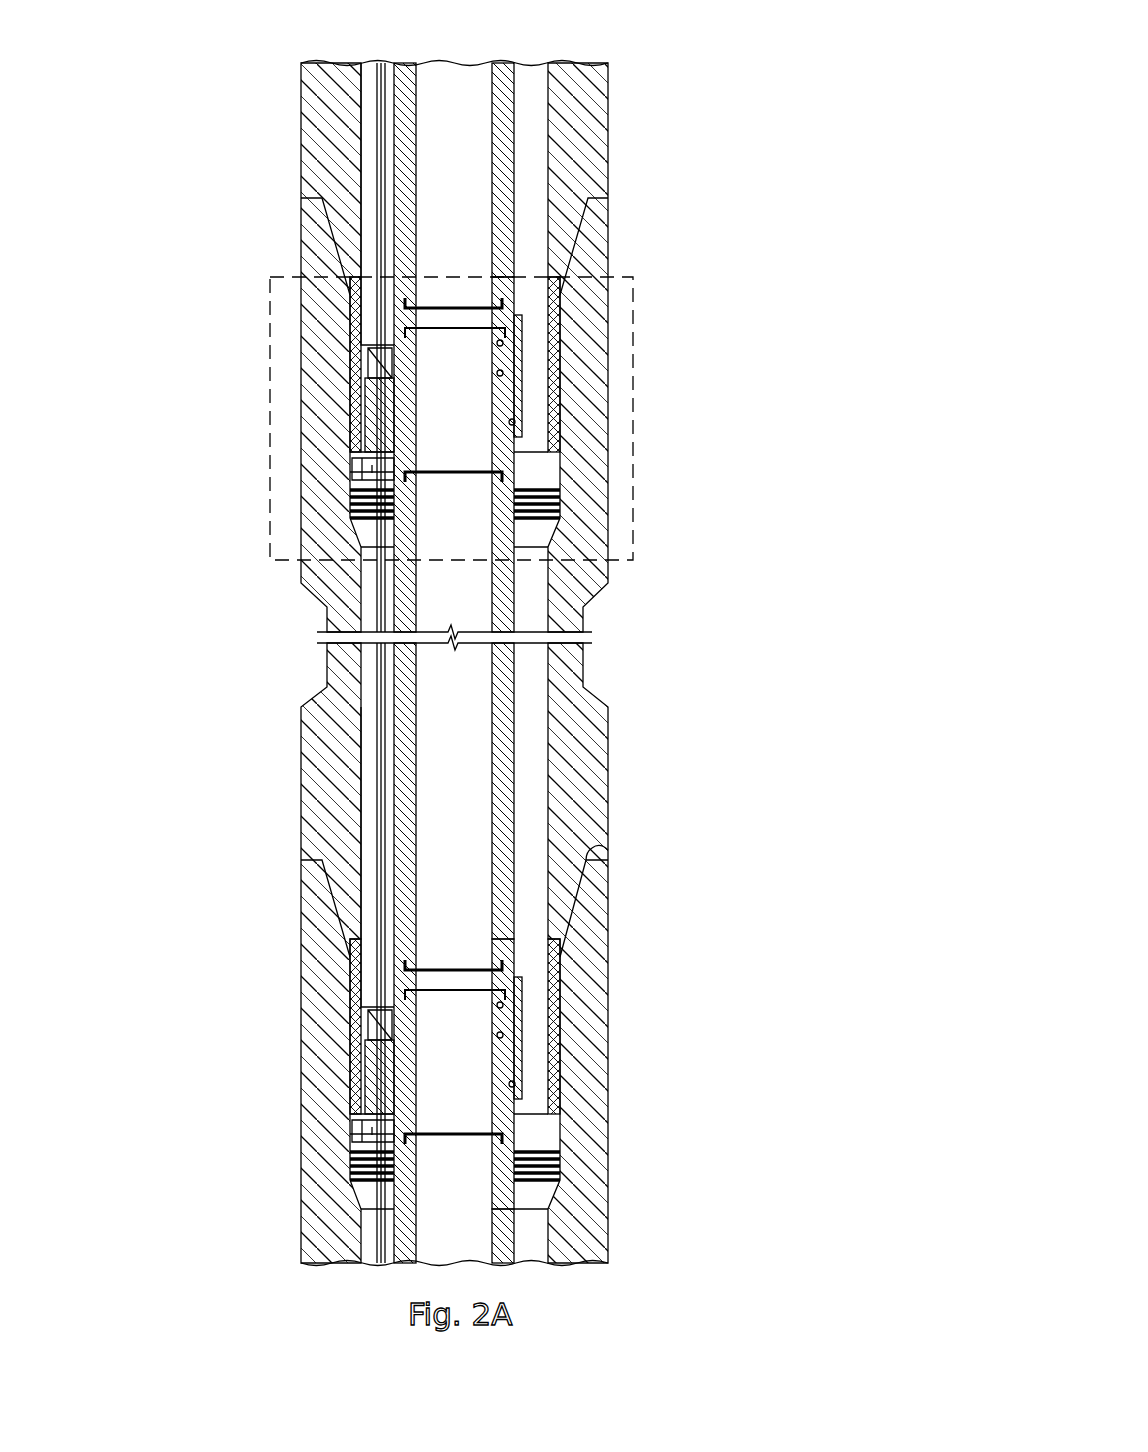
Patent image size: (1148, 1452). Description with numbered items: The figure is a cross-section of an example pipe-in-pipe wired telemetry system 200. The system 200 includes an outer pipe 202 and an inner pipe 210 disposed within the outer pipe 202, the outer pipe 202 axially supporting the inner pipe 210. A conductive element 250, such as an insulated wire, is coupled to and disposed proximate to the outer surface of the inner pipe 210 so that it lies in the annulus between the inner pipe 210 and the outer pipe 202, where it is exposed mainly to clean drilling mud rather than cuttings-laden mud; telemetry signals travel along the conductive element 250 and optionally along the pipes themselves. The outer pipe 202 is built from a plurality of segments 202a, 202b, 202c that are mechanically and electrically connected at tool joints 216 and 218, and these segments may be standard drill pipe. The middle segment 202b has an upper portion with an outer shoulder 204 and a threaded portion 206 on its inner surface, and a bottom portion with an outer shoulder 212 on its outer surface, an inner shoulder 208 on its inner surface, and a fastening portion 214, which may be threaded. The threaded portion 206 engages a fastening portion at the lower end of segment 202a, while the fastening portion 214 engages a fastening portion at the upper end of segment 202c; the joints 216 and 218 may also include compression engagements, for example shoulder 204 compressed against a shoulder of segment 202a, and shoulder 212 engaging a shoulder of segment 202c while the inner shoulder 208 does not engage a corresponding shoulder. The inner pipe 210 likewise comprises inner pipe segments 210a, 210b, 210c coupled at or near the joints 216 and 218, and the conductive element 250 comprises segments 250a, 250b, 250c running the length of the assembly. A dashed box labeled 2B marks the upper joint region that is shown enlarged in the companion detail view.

The pipe-in-pipe telemetry system 200 is at (748, 82).
The outer pipe 202 is at (608, 150).
The outer pipe segment 202a is at (301, 103).
The outer pipe segment 202b is at (301, 210).
The outer pipe segment 202c is at (301, 1097).
The outer shoulder 204 is at (588, 198).
The threaded portion 206 is at (577, 235).
The inner shoulder 208 is at (575, 905).
The inner pipe 210 is at (514, 803).
The inner pipe segment 210a is at (514, 113).
The inner pipe segment 210b is at (514, 718).
The inner pipe segment 210c is at (514, 1227).
The outer shoulder 212 is at (602, 848).
The fastening portion 214 is at (327, 882).
The tool joint 216 is at (270, 168).
The tool joint 218 is at (265, 813).
The conductive element 250 is at (377, 768).
The conductive element segment 250a is at (377, 138).
The conductive element segment 250b is at (377, 598).
The conductive element segment 250c is at (377, 1227).
The detail view reference 2B is at (633, 380).